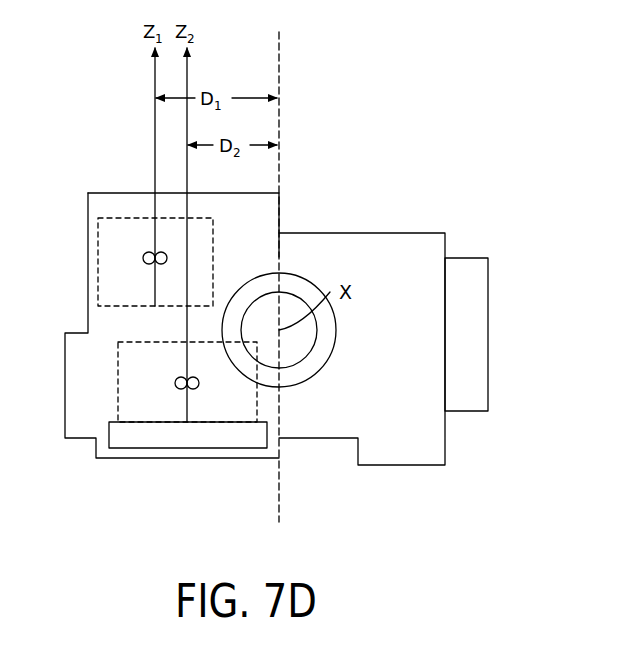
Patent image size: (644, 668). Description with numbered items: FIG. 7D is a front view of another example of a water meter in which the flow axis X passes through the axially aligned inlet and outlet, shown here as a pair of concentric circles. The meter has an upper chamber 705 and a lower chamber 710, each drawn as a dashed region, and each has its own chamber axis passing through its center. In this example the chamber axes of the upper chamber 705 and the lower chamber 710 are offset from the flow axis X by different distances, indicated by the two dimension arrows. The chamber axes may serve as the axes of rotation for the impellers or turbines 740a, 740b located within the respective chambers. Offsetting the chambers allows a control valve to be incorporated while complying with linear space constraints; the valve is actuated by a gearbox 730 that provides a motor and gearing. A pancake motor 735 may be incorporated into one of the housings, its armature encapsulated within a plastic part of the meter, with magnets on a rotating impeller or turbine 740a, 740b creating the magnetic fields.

The upper chamber 705 is at (88, 268).
The lower chamber 710 is at (112, 390).
The gearbox 730 is at (493, 330).
The pancake motor 735 is at (140, 450).
The impeller or turbine 740a is at (152, 238).
The impeller or turbine 740b is at (187, 408).